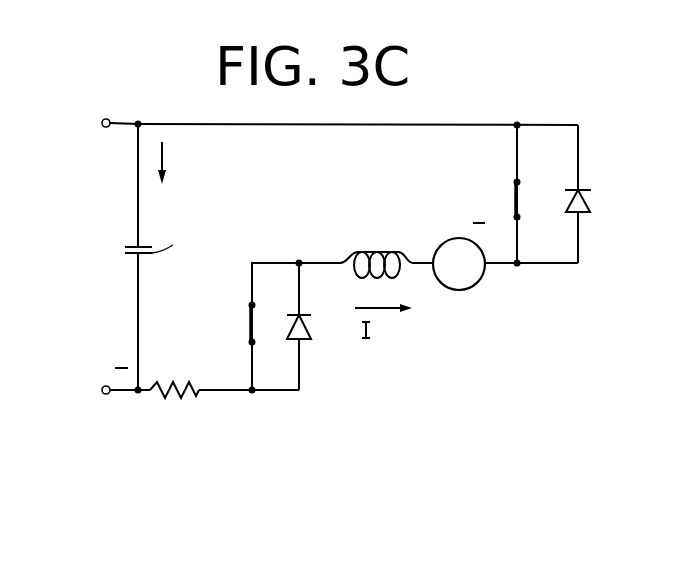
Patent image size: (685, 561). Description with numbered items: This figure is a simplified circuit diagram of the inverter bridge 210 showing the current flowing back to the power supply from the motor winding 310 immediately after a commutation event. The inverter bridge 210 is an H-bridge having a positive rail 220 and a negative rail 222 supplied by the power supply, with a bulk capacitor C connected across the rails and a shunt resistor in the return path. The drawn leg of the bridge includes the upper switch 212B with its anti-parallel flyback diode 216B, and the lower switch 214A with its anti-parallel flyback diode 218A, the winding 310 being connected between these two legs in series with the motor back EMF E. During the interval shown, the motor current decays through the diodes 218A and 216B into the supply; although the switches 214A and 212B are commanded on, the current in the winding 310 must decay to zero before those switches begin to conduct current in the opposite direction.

The inverter bridge 210 is at (170, 411).
The positive rail 220 is at (332, 126).
The negative rail 222 is at (223, 392).
The upper switch 212B is at (513, 198).
The flyback diode 216B is at (589, 198).
The lower switch 214A is at (248, 320).
The flyback diode 218A is at (305, 341).
The winding 310 is at (359, 252).